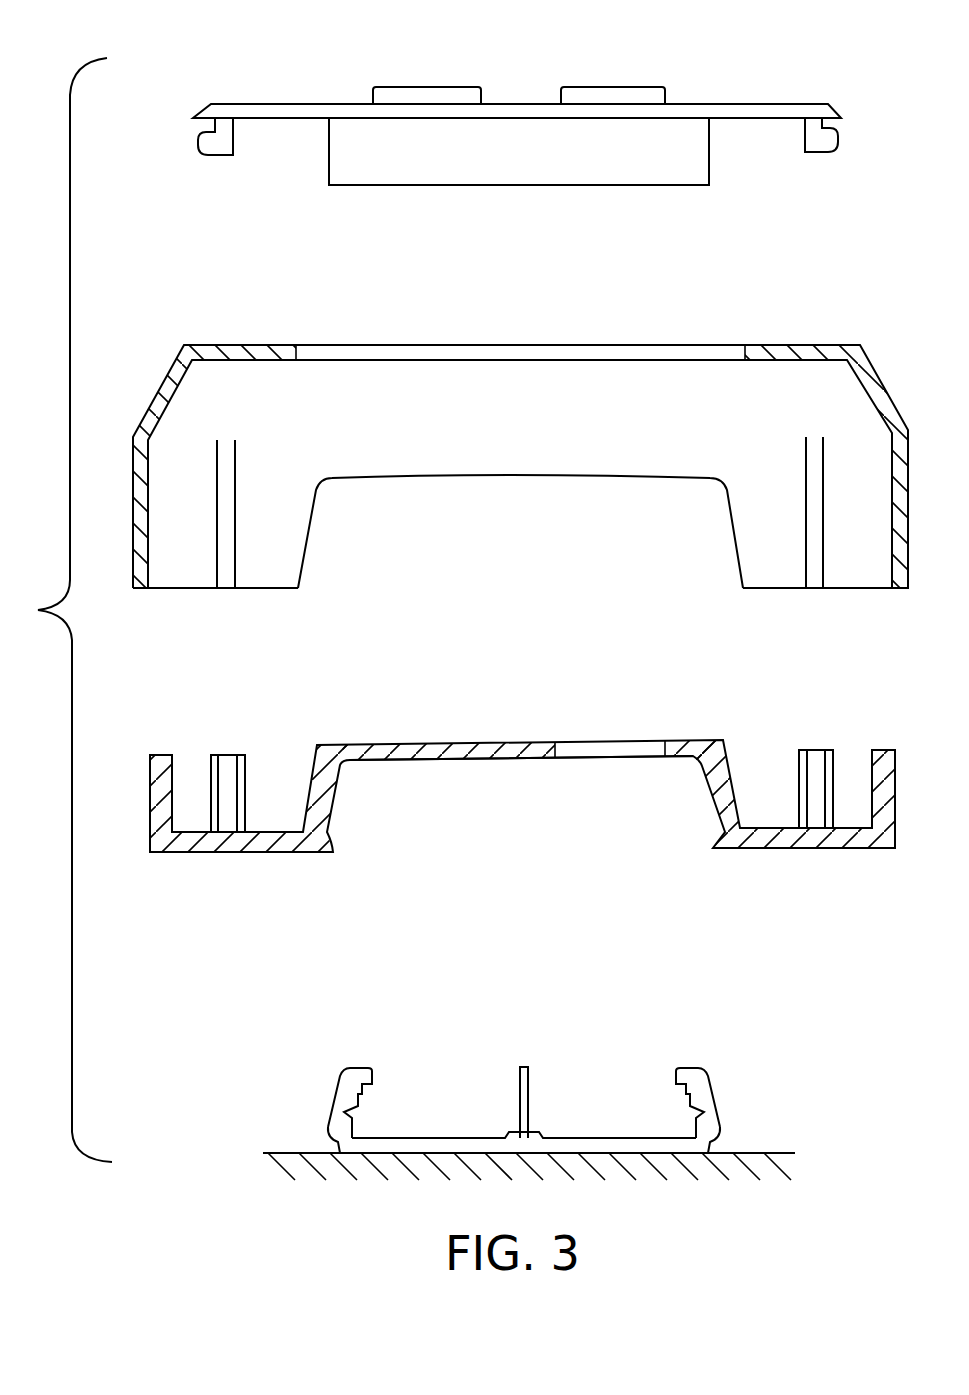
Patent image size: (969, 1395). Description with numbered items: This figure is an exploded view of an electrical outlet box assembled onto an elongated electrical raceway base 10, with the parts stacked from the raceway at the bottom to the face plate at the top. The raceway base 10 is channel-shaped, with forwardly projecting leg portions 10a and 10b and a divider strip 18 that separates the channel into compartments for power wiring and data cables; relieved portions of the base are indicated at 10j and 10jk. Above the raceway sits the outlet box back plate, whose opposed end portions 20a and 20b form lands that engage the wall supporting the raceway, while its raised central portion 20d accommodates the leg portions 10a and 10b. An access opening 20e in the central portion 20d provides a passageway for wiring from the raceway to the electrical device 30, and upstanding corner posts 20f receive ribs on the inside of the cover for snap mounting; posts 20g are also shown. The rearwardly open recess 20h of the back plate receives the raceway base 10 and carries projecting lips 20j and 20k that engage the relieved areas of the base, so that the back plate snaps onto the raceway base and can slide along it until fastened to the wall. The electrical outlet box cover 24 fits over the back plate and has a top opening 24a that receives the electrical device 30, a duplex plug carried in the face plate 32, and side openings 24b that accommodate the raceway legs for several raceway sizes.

The electrical raceway base 10 is at (535, 1085).
The forwardly projecting leg portion 10a is at (372, 1083).
The forwardly projecting leg portion 10b is at (683, 1082).
The relieved portion of the raceway base 10j is at (338, 1143).
The right foot 10jk is at (713, 1142).
The divider strip 18 is at (530, 1078).
The end portion of the back plate 20a is at (255, 852).
The end portion of the back plate 20b is at (832, 848).
The central portion of the back plate 20d is at (394, 745).
The access opening 20e is at (553, 742).
The upstanding corner post 20f is at (175, 768).
The riser rib 20g is at (245, 770).
The rearwardly open recess 20h is at (487, 757).
The projecting lip 20j is at (333, 845).
The projecting lip 20k is at (713, 846).
The electrical outlet box cover 24 is at (520, 399).
The top opening 24a is at (297, 352).
The side opening 24b is at (502, 477).
The electrical device 30 is at (517, 94).
The face plate 32 is at (737, 104).